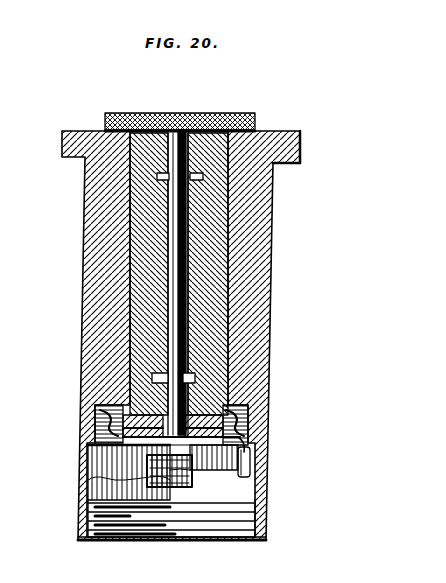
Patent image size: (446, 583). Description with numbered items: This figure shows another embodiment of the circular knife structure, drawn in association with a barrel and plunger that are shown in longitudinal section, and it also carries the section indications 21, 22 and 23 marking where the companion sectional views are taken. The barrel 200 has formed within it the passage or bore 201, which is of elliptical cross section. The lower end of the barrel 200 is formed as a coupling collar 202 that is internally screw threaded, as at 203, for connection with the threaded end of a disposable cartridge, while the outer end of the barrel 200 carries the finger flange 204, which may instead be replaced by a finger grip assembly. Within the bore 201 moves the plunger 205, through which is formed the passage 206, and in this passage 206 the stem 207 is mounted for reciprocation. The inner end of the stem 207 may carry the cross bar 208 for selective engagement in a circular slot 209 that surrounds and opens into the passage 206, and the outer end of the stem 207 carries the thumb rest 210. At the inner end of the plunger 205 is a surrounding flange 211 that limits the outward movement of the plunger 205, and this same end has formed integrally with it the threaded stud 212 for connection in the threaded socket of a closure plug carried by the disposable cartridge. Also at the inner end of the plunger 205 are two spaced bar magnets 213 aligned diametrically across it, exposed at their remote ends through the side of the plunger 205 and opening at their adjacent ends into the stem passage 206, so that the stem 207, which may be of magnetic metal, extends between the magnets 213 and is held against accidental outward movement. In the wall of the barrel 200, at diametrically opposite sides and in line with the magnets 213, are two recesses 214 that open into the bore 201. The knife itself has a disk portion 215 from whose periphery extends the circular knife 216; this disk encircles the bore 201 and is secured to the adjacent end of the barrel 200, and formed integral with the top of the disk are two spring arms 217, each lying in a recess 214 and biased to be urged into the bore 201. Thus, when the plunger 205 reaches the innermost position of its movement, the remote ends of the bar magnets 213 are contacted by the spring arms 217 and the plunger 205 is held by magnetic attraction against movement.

The barrel 200 is at (275, 269).
The passage or bore 201 is at (227, 228).
The coupling collar 202 is at (266, 531).
The internal screw threads 203 is at (125, 503).
The finger flange 204 is at (300, 155).
The plunger 205 is at (208, 296).
The passage 206 is at (188, 337).
The stem 207 is at (173, 268).
The cross bar 208 is at (130, 348).
The circular slot 209 is at (205, 175).
The thumb rest 210 is at (233, 115).
The surrounding flange 211 is at (182, 480).
The threaded stud 212 is at (170, 487).
The bar magnets 213 is at (140, 403).
The recesses 214 is at (78, 448).
The disk portion of the knife 215 is at (266, 487).
The circular knife 216 is at (250, 466).
The spring arms 217 is at (78, 432).
The section line 21 is at (78, 420).
The section line 22 is at (72, 451).
The section line 23 is at (90, 377).